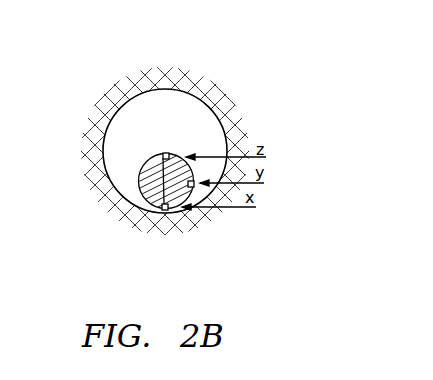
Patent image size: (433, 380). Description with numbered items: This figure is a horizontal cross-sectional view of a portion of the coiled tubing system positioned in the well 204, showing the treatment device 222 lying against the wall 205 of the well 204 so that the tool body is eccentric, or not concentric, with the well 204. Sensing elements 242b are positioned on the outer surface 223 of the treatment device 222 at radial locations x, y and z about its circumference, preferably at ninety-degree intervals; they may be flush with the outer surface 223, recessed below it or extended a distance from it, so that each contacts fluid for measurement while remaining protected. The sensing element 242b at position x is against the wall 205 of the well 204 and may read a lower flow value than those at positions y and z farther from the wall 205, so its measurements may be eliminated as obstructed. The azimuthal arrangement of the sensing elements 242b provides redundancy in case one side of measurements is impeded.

The well 204 is at (210, 109).
The wall 205 is at (102, 148).
The treatment device 222 is at (138, 186).
The outer surface 223 is at (162, 155).
The sensor elements 242b is at (190, 188).